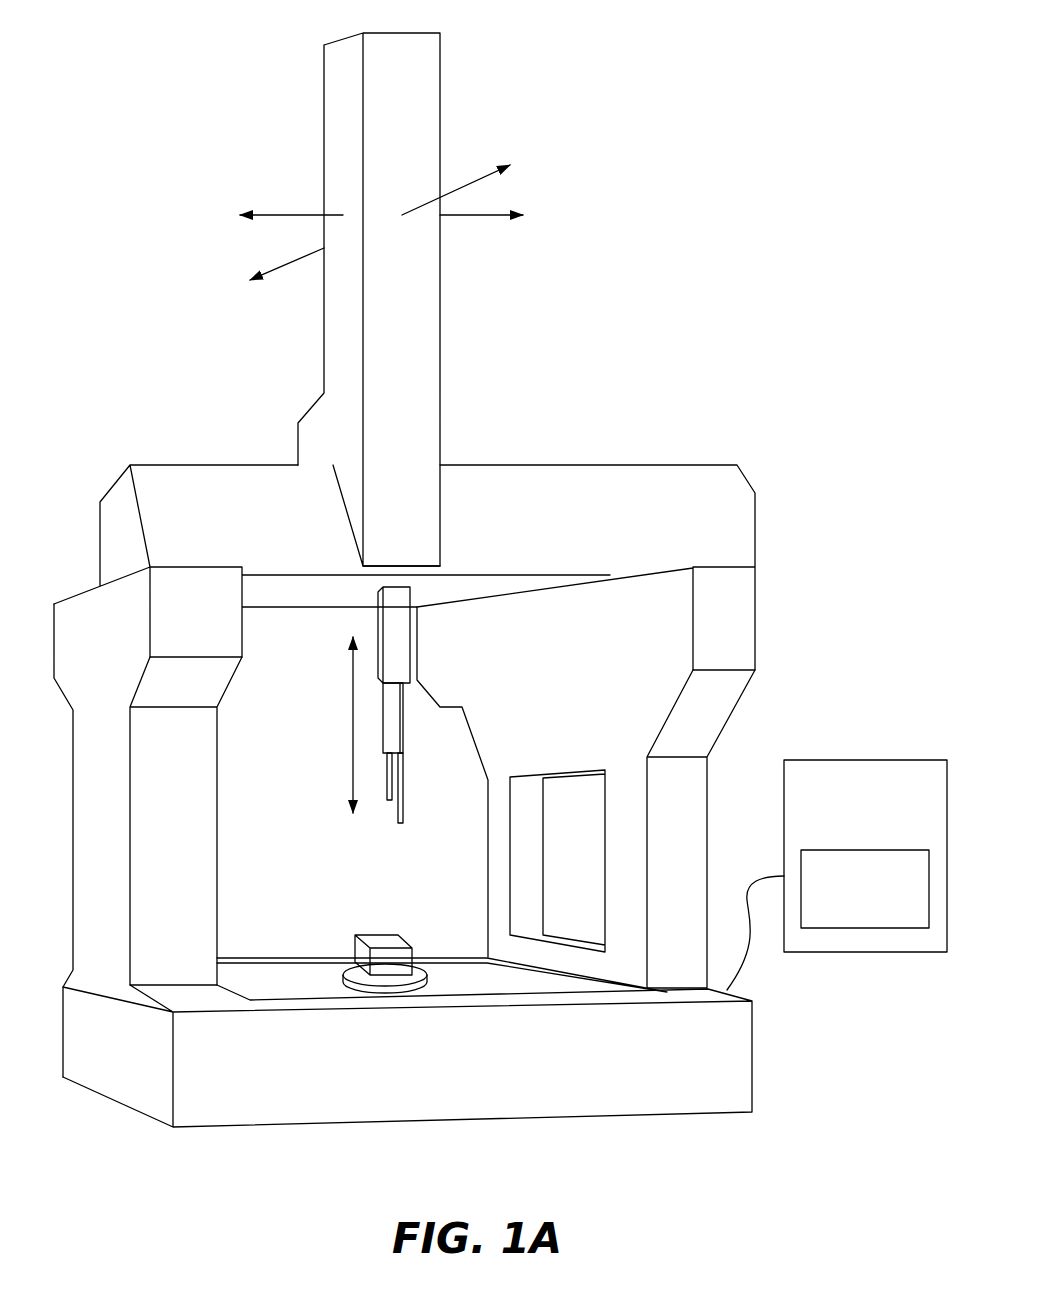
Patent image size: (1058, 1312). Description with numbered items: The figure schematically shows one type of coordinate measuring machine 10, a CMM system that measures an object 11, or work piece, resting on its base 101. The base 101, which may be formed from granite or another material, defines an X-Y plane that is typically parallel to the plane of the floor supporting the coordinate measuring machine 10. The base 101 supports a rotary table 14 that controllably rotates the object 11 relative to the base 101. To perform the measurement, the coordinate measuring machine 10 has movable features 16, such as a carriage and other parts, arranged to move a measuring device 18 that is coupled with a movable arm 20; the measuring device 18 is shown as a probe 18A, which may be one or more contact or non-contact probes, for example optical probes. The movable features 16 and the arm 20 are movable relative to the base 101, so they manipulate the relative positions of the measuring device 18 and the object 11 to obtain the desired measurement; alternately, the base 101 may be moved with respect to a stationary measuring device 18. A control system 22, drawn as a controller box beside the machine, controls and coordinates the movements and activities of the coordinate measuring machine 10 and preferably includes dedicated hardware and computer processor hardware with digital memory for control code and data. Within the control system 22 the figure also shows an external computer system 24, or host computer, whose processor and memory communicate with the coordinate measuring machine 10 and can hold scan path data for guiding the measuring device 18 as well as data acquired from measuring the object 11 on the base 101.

The coordinate measuring machine 10 is at (500, 580).
The movable features 16 is at (512, 463).
The movable arm 20 is at (402, 630).
The measuring device 18 is at (417, 743).
The probe 18A is at (388, 823).
The rotary table 14 is at (348, 965).
The object 11 is at (390, 937).
The base 101 is at (773, 1063).
The control system 22 is at (865, 856).
The computer system 24 is at (865, 889).